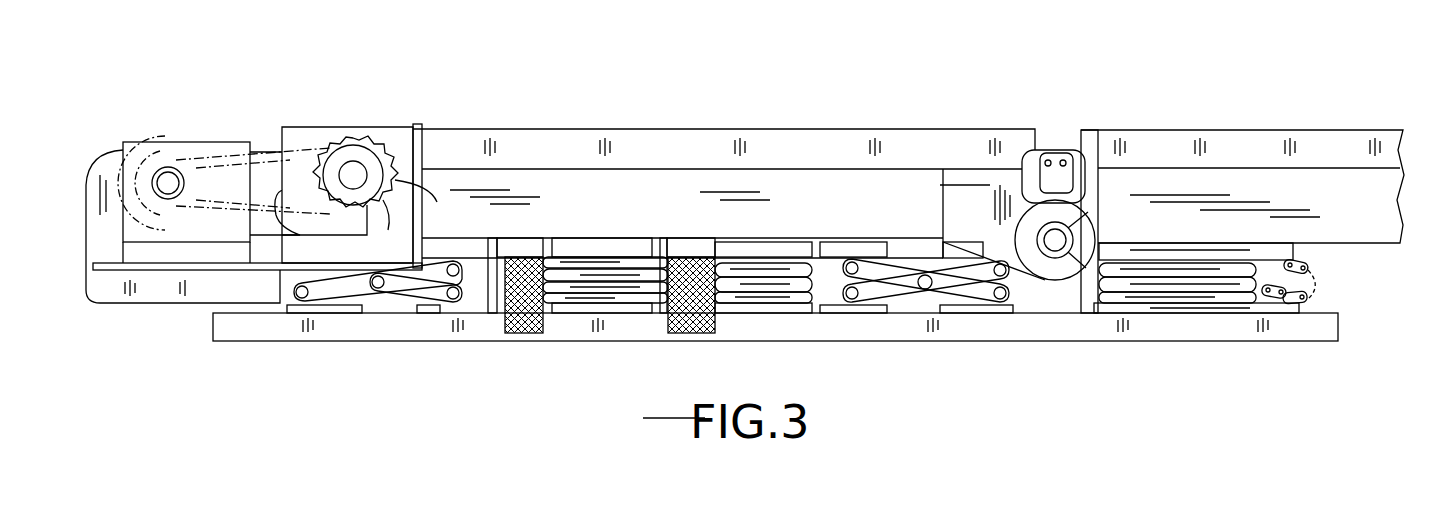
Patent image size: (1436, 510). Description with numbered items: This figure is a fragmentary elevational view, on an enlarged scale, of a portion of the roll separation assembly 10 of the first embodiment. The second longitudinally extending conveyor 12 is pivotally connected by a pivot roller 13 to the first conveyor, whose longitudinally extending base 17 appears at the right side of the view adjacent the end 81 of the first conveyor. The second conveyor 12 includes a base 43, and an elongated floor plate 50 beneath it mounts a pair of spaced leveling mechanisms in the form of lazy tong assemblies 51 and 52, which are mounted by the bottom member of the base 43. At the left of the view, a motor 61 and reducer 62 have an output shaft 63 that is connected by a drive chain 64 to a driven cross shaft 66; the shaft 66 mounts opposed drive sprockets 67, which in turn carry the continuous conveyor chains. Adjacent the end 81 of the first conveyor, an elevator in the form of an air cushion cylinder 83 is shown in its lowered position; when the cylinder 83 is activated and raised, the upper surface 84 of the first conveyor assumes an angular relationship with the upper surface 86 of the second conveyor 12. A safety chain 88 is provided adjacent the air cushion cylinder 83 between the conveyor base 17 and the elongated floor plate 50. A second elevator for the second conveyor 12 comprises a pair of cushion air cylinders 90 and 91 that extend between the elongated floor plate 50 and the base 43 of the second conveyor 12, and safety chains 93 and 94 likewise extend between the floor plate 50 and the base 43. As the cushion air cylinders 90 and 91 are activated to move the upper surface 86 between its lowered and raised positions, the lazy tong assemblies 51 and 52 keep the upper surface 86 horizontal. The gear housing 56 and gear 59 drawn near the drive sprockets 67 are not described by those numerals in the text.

The roll separation assembly 10 is at (810, 127).
The second longitudinally extending conveyor 12 is at (338, 140).
The pivot roller 13 is at (1082, 152).
The longitudinally extending base 17 is at (1349, 247).
The base 43 is at (657, 222).
The elongated floor plate 50 is at (560, 350).
The lazy tong assembly 51 is at (375, 317).
The lazy tong assembly 52 is at (920, 315).
The gear housing 56 is at (353, 135).
The gear 59 is at (377, 138).
The motor 61 is at (255, 233).
The reducer 62 is at (133, 140).
The output shaft 63 is at (170, 168).
The drive chain 64 is at (243, 142).
The driven cross shaft 66 is at (387, 233).
The drive sprockets 67 is at (438, 207).
The end 81 is at (1175, 128).
The air cushion cylinder 83 is at (1131, 303).
The upper surface 84 is at (1310, 128).
The upper surface 86 is at (568, 128).
The safety chain 88 is at (1306, 300).
The cushion air cylinder 90 is at (600, 307).
The cushion air cylinder 91 is at (757, 305).
The safety chain 93 is at (517, 333).
The safety chain 94 is at (703, 337).